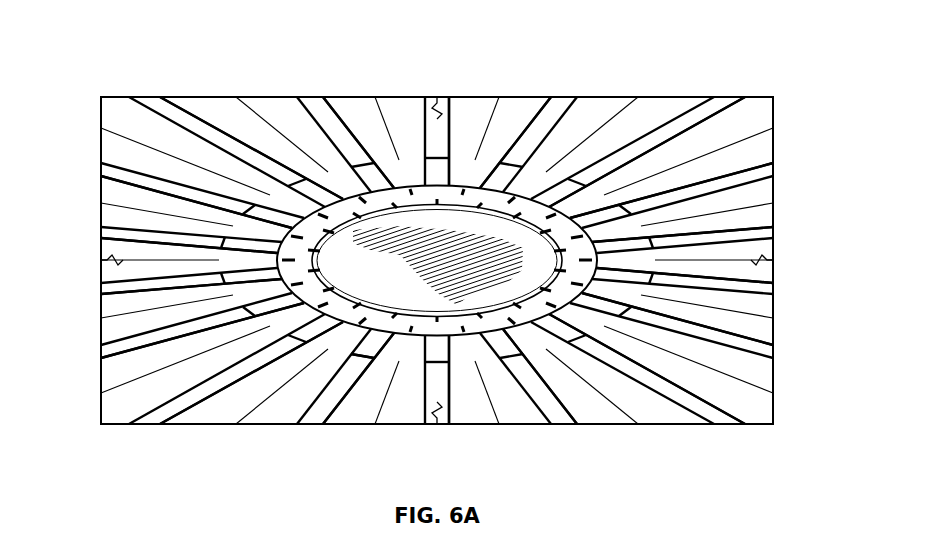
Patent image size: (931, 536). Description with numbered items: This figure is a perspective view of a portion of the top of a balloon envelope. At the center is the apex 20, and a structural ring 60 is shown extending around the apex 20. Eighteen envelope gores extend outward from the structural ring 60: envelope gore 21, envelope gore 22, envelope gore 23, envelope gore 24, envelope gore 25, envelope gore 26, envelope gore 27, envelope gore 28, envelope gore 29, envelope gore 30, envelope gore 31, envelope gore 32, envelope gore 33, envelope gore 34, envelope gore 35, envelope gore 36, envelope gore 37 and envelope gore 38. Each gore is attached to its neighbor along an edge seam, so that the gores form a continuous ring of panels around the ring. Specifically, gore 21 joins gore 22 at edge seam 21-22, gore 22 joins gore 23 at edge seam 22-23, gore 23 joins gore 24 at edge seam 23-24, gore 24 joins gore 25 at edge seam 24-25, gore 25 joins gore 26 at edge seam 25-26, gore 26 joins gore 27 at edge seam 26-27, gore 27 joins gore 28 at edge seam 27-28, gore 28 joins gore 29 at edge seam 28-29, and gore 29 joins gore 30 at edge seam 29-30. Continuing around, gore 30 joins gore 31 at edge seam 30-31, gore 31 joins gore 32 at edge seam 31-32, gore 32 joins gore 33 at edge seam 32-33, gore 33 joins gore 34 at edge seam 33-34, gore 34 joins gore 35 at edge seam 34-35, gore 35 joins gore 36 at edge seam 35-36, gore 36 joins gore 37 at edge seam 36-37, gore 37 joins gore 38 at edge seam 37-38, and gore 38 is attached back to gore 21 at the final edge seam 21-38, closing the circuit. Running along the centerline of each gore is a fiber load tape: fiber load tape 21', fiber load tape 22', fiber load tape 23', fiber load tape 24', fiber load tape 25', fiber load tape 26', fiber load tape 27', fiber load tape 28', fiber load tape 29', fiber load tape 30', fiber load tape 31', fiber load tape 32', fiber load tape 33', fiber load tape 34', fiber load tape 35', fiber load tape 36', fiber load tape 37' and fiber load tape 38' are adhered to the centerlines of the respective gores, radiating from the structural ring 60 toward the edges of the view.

The apex 20 is at (452, 292).
The structural ring 60 is at (360, 366).
The envelope gore 21 is at (423, 122).
The fiber load tape 21' is at (449, 108).
The edge seam 21-22 is at (375, 97).
The envelope gore 22 is at (328, 125).
The fiber load tape 22' is at (339, 109).
The edge seam 22-23 is at (236, 97).
The envelope gore 23 is at (202, 137).
The fiber load tape 23' is at (235, 129).
The edge seam 23-24 is at (101, 128).
The envelope gore 24 is at (179, 172).
The fiber load tape 24' is at (171, 184).
The edge seam 24-25 is at (101, 203).
The envelope gore 25 is at (168, 221).
The fiber load tape 25' is at (164, 232).
The edge seam 25-26 is at (101, 260).
The envelope gore 26 is at (168, 276).
The fiber load tape 26' is at (166, 296).
The edge seam 26-27 is at (101, 318).
The envelope gore 27 is at (179, 325).
The fiber load tape 27' is at (177, 343).
The edge seam 27-28 is at (101, 393).
The envelope gore 28 is at (199, 383).
The fiber load tape 28' is at (233, 392).
The edge seam 28-29 is at (236, 424).
The envelope gore 29 is at (325, 396).
The fiber load tape 29' is at (341, 413).
The edge seam 29-30 is at (375, 424).
The envelope gore 30 is at (418, 399).
The fiber load tape 30' is at (437, 414).
The edge seam 30-31 is at (499, 424).
The envelope gore 31 is at (528, 396).
The fiber load tape 31' is at (548, 411).
The edge seam 31-32 is at (638, 424).
The envelope gore 32 is at (638, 388).
The fiber load tape 32' is at (650, 403).
The edge seam 32-33 is at (773, 393).
The envelope gore 33 is at (695, 349).
The fiber load tape 33' is at (704, 338).
The edge seam 33-34 is at (773, 318).
The envelope gore 34 is at (706, 302).
The fiber load tape 34' is at (711, 290).
The edge seam 34-35 is at (773, 260).
The envelope gore 35 is at (706, 246).
The fiber load tape 35' is at (709, 226).
The edge seam 35-36 is at (773, 203).
The envelope gore 36 is at (695, 195).
The fiber load tape 36' is at (698, 179).
The edge seam 36-37 is at (773, 128).
The envelope gore 37 is at (638, 133).
The fiber load tape 37' is at (655, 119).
The edge seam 37-38 is at (638, 97).
The envelope gore 38 is at (546, 125).
The fiber load tape 38' is at (537, 109).
The final edge seam 21-38 is at (499, 97).